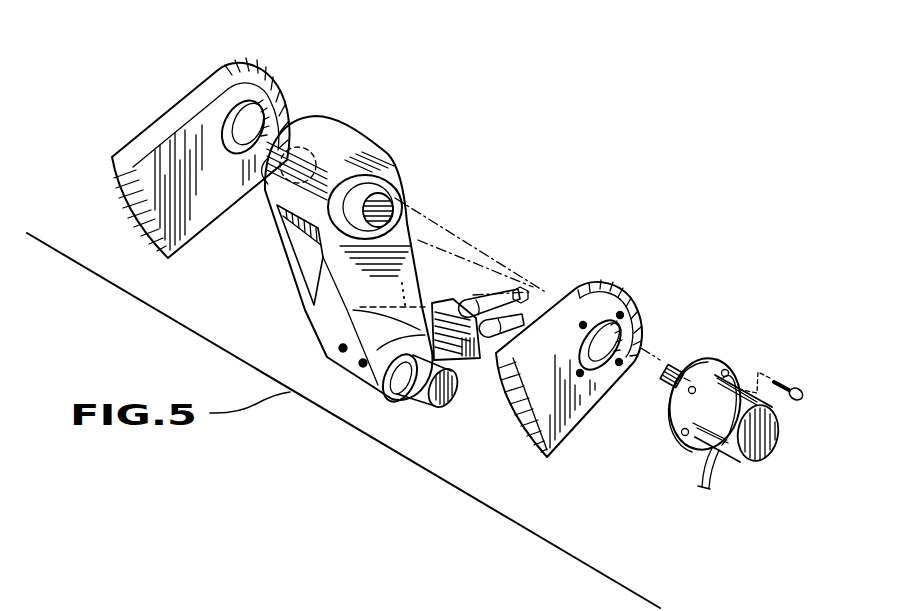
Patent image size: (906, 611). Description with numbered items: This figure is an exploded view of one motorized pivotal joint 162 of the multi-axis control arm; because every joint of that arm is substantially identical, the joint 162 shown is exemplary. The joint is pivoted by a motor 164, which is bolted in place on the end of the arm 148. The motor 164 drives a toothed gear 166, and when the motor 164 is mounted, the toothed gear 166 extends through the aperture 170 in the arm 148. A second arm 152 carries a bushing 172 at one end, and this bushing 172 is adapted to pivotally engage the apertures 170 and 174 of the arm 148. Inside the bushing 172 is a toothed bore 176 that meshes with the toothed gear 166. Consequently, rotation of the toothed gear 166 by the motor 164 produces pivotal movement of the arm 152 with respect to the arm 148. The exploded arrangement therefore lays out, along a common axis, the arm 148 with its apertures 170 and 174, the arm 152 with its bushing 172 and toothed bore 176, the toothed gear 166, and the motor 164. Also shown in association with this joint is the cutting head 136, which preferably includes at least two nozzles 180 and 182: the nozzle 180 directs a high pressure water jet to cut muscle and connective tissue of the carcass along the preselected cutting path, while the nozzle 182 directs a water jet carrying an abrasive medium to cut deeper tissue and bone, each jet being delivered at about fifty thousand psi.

The arm 148 is at (226, 152).
The aperture 174 is at (282, 86).
The pivotal joint 162 is at (377, 243).
The bushing 172 is at (397, 203).
The toothed bore 176 is at (403, 200).
The arm 152 is at (438, 298).
The cutting head 136 is at (453, 301).
The nozzle 180 is at (505, 320).
The nozzle 182 is at (533, 320).
The aperture 170 is at (645, 318).
The toothed gear 166 is at (674, 362).
The motor 164 is at (758, 463).